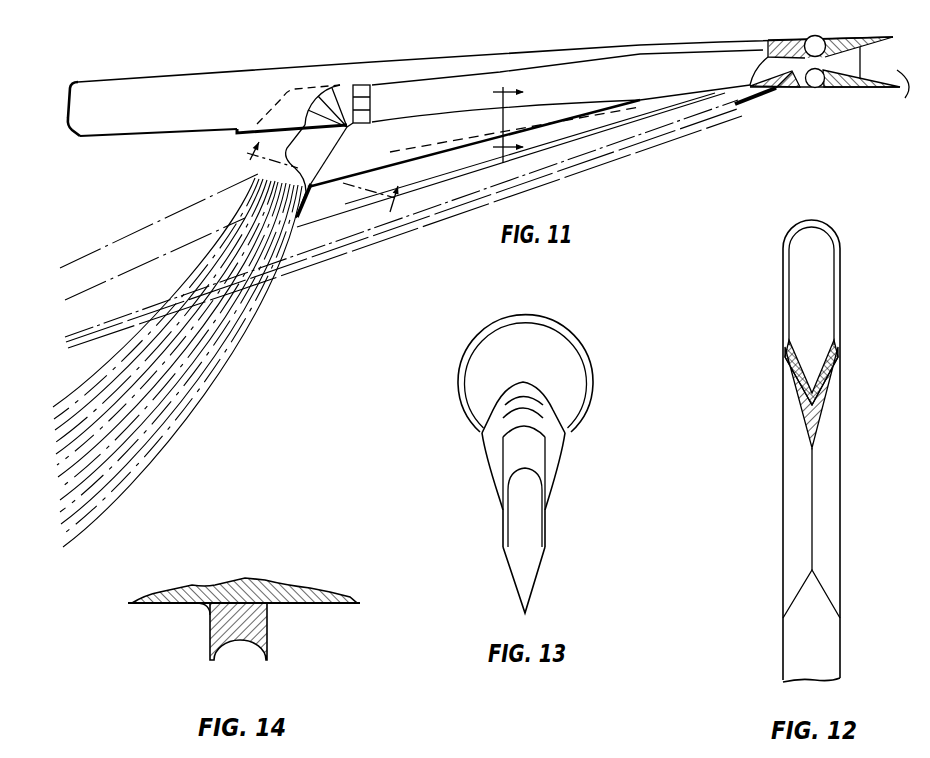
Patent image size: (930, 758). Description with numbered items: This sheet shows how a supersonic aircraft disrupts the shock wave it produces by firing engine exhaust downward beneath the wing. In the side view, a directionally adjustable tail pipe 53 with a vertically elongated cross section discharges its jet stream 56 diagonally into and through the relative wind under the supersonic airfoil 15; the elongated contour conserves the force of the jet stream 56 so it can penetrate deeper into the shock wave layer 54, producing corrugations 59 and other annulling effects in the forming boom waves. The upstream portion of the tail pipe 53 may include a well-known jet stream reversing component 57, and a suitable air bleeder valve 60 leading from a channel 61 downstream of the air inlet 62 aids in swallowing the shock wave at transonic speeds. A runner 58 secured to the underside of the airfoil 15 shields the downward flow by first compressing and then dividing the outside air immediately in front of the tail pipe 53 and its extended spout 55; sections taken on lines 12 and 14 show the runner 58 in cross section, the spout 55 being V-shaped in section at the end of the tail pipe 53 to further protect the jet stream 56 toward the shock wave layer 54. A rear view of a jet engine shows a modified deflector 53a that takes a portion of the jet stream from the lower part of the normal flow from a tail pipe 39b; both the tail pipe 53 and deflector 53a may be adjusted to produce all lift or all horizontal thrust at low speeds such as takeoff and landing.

In FIG. 11, the section line 12- 12 is at (313, 179).
In FIG. 11, the section line 14- 14 is at (505, 120).
In FIG. 11, the supersonic airfoil 15 is at (690, 97).
In FIG. 14, the supersonic airfoil 15 is at (193, 603).
In FIG. 13, the tail pipe 39b is at (583, 360).
In FIG. 11, the directionally adjustable tail pipe 53 is at (326, 158).
In FIG. 12, the directionally adjustable tail pipe 53 is at (840, 270).
In FIG. 13, the deflector 53a is at (540, 463).
In FIG. 11, the shock wave layer 54 is at (326, 250).
In FIG. 11, the extended spout 55 is at (311, 193).
In FIG. 13, the extended spout 55 is at (538, 556).
In FIG. 12, the extended spout 55 is at (838, 348).
In FIG. 11, the jet stream 56 is at (226, 255).
In FIG. 11, the jet stream reversing component 57 is at (368, 87).
In FIG. 11, the runner 58 is at (420, 141).
In FIG. 12, the runner 58 is at (839, 500).
In FIG. 14, the runner 58 is at (268, 637).
In FIG. 11, the corrugations 59 is at (158, 432).
In FIG. 11, the air bleeder valve 60 is at (748, 101).
In FIG. 11, the channel 61 is at (797, 89).
In FIG. 11, the air inlet 62 is at (829, 75).